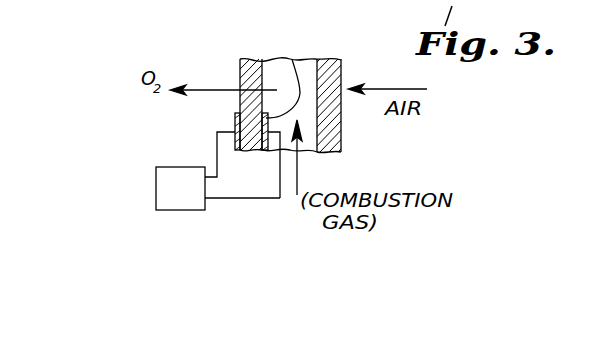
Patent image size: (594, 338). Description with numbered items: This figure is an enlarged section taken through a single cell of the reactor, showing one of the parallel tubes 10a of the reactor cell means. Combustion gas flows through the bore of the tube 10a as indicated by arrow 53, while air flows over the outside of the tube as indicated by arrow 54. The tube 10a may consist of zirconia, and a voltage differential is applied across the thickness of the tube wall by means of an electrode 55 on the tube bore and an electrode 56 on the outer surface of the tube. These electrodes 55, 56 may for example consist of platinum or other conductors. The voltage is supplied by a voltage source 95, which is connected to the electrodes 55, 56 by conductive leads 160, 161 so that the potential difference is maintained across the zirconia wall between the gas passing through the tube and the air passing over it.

The parallel tube 10a is at (341, 62).
The electrode 55 is at (292, 59).
The arrow 54 is at (407, 89).
The electrode 56 is at (235, 120).
The lead wire 160 is at (217, 151).
The lead wire 161 is at (233, 199).
The voltage source 95 is at (165, 183).
The arrow 53 is at (297, 168).